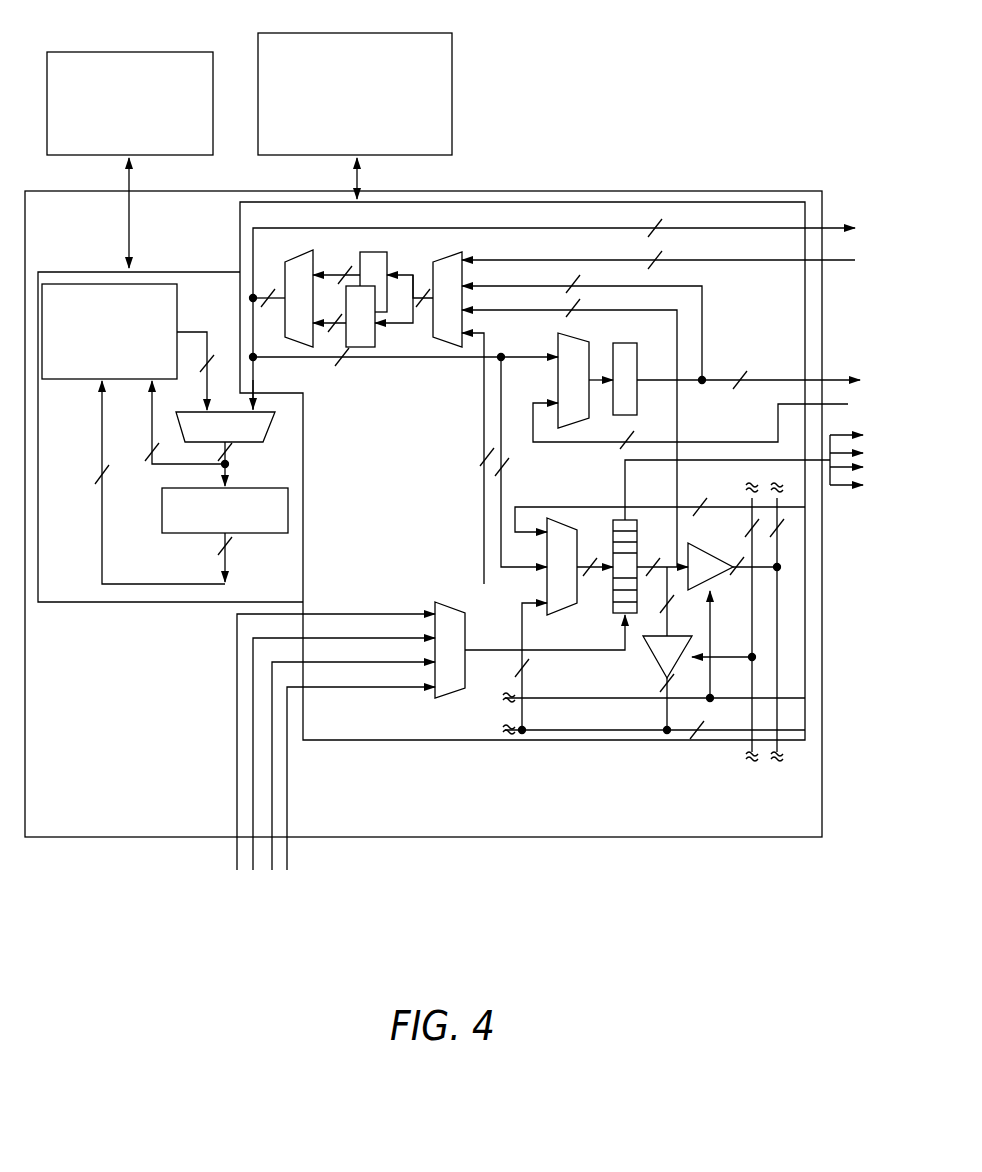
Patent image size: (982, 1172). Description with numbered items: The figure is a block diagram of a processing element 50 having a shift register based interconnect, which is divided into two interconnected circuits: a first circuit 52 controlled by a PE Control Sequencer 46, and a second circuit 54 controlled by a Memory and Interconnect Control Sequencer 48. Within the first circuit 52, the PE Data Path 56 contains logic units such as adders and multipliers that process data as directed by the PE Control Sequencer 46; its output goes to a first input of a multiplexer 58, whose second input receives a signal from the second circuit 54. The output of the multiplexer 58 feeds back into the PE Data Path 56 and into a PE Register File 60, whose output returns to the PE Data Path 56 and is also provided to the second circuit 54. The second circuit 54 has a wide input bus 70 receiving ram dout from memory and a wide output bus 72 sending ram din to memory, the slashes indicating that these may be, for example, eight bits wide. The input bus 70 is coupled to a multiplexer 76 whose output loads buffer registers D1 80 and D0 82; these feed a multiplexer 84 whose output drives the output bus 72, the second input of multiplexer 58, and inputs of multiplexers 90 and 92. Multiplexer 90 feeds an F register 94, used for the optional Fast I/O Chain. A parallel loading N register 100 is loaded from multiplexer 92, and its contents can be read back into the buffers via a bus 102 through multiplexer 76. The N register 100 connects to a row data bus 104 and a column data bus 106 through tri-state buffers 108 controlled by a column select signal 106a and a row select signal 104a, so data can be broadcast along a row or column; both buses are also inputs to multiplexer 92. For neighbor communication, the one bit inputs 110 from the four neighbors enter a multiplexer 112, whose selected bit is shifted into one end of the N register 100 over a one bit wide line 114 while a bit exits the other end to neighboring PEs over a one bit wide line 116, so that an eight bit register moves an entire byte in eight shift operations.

The PE Control Sequencer 46 is at (136, 51).
The Memory and Interconnect Control Sequencer 48 is at (346, 33).
The processing element 50 is at (37, 191).
The first circuit 52 is at (48, 604).
The second circuit 54 is at (372, 742).
The PE Data Path 56 is at (181, 300).
The multiplexer 58 is at (253, 444).
The PE Register File 60 is at (170, 535).
The input bus 70 is at (838, 262).
The output bus 72 is at (828, 228).
The multiplexer 76 is at (452, 257).
The buffer register D1 80 is at (370, 252).
The buffer register D0 82 is at (372, 346).
The multiplexer 84 is at (311, 258).
The multiplexer 90 is at (566, 339).
The multiplexer 92 is at (553, 612).
The F register 94 is at (625, 343).
The N register 100 is at (620, 526).
The bus 102 is at (678, 411).
The row data bus 104 is at (777, 758).
The row select signal 104a is at (520, 712).
The column data bus 106 is at (613, 731).
The column select signal 106a is at (750, 713).
The tri-state buffer 108 is at (693, 548).
The input from neighbors 110 is at (287, 845).
The multiplexer 112 is at (445, 613).
The one bit wide line 114 is at (517, 650).
The one bit wide line 116 is at (693, 461).